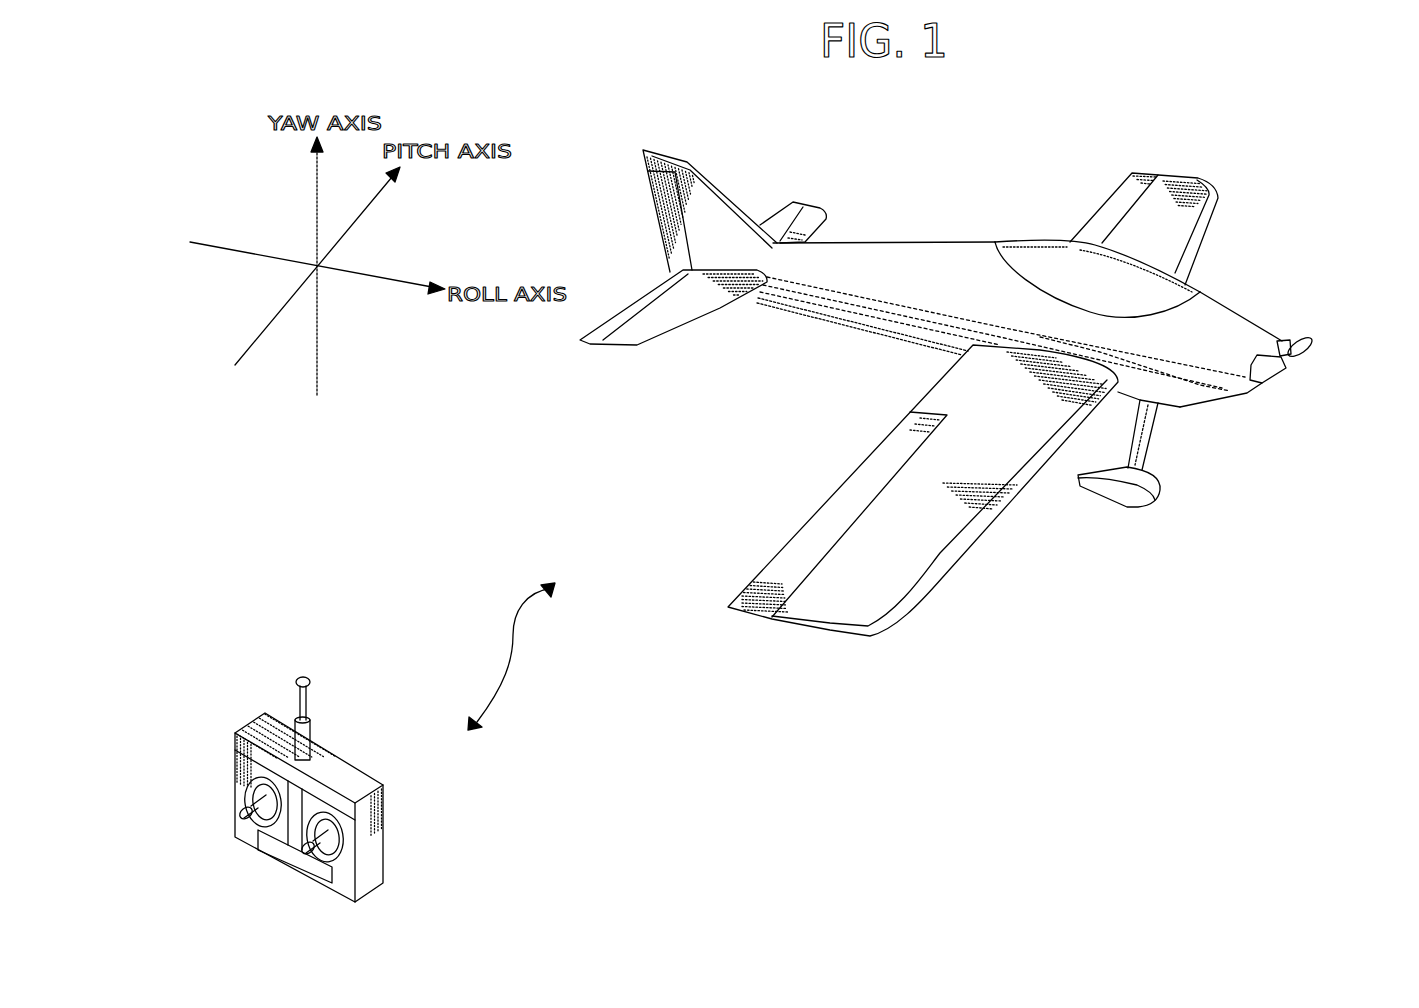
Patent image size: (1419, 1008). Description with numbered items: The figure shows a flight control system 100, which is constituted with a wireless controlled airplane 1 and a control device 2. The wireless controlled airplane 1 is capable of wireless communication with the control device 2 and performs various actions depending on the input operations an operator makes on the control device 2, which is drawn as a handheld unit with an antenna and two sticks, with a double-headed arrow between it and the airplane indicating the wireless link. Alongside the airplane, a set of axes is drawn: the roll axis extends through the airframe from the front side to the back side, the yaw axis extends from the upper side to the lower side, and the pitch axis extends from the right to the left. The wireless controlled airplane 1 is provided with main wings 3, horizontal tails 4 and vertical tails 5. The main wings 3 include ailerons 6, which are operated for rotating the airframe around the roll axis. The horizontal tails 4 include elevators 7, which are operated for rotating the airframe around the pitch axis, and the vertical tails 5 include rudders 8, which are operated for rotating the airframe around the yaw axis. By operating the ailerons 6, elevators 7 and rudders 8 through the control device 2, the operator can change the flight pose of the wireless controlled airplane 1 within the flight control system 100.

The wireless controlled airplane 1 is at (925, 247).
The control device 2 is at (372, 845).
The main wings 3 is at (1195, 229).
The horizontal tails 4 is at (813, 213).
The vertical tails 5 is at (703, 175).
The ailerons 6 is at (1107, 212).
The elevators 7 is at (783, 212).
The rudders 8 is at (660, 208).
The flight control system 100 is at (1137, 722).